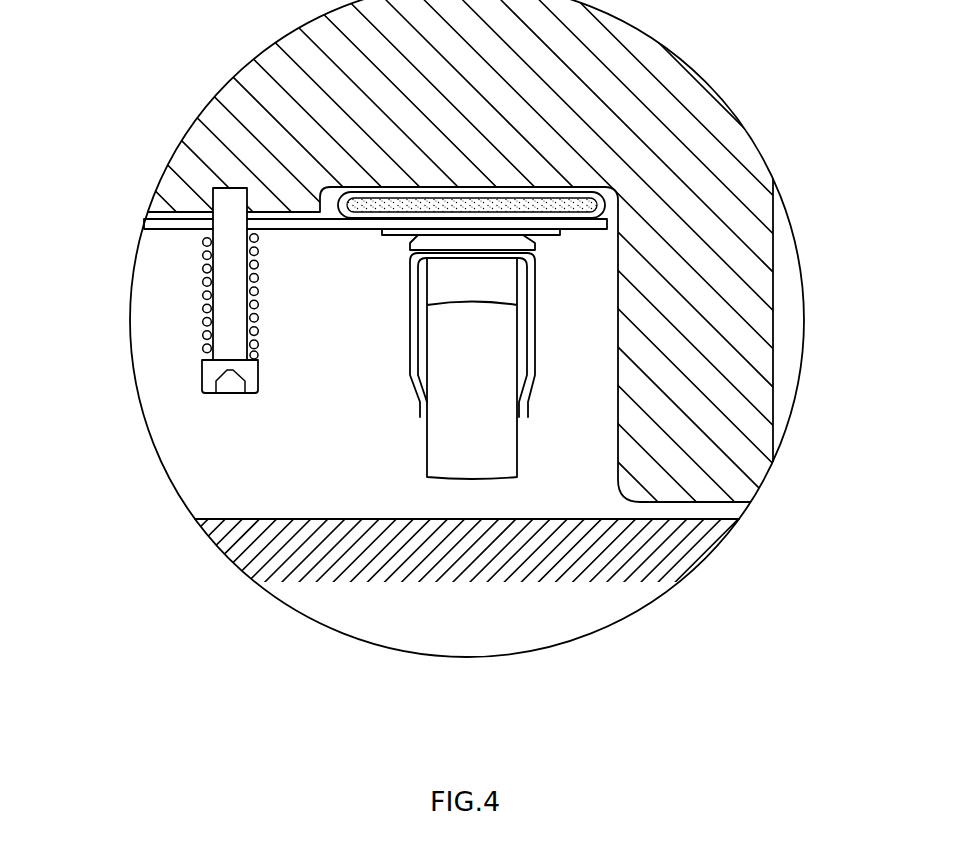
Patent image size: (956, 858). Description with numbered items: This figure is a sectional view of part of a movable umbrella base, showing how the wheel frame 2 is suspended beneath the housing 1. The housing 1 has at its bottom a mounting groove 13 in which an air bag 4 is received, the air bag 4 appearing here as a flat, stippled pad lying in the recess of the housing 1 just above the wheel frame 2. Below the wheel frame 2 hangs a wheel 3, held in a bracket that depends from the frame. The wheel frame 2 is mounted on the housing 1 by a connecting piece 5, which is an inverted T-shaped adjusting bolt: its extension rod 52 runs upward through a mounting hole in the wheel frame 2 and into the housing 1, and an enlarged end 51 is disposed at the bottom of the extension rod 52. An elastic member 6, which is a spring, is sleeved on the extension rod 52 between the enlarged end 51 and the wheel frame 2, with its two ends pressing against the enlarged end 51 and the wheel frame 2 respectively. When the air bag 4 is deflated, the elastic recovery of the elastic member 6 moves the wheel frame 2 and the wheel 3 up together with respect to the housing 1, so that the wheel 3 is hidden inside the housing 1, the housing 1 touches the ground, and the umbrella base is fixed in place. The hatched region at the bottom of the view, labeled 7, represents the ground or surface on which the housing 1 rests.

The housing 1 is at (707, 167).
The mounting groove 13 is at (608, 200).
The wheel frame 2 is at (172, 225).
The wheel 3 is at (467, 410).
The air bag 4 is at (357, 203).
The connecting piece 5 is at (137, 307).
The enlarged end 51 is at (167, 393).
The extension rod 52 is at (230, 270).
The elastic member 6 is at (257, 303).
The bottom cover 7 is at (445, 568).